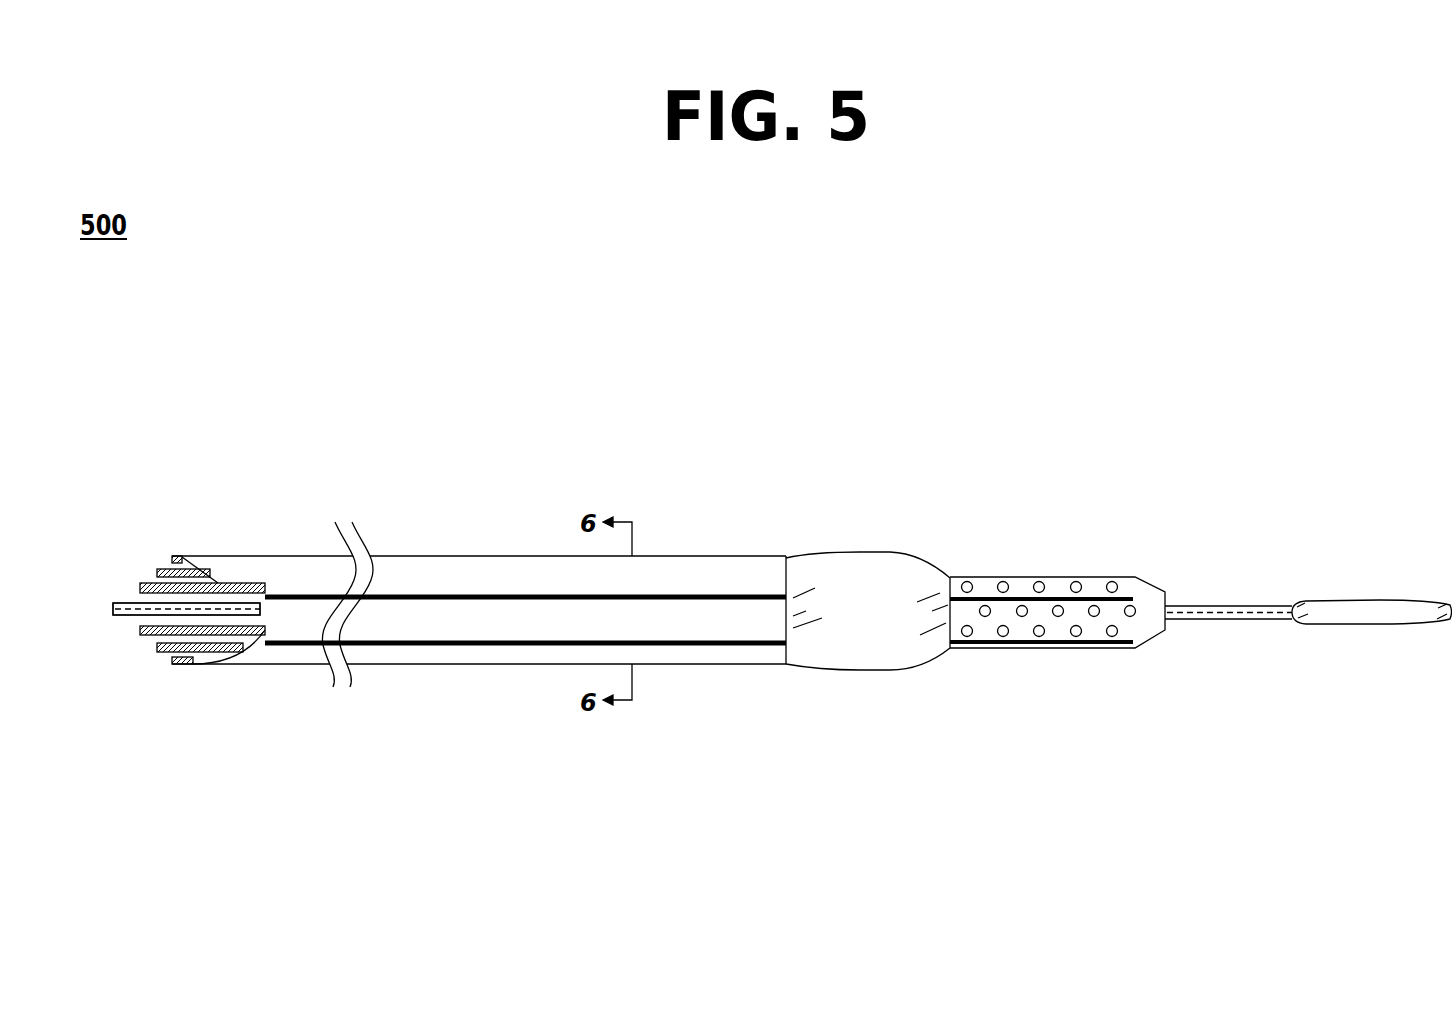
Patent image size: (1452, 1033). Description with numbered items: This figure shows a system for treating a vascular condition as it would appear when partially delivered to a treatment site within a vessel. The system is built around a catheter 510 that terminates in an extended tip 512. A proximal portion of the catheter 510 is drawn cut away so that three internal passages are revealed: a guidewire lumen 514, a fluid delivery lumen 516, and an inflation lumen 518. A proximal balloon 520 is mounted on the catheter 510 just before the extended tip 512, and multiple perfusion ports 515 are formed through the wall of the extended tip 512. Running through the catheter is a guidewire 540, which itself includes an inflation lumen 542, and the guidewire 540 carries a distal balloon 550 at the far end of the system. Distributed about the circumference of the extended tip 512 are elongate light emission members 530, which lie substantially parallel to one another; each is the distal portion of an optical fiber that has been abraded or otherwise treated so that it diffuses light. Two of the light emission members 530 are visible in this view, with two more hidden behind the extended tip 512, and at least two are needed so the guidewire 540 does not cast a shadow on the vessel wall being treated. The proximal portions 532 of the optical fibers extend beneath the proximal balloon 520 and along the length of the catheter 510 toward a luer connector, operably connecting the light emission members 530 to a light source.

The catheter 510 is at (480, 572).
The extended tip 512 is at (1172, 677).
The guidewire lumen 514 is at (254, 619).
The perfusion ports 515 is at (1113, 584).
The fluid delivery lumen 516 is at (223, 639).
The inflation lumen 518 is at (193, 657).
The proximal balloon 520 is at (858, 572).
The light emission members 530 is at (1023, 598).
The proximal portions of optical fibers 532 is at (686, 597).
The guidewire 540 is at (121, 615).
The inflation lumen 542 is at (100, 608).
The distal balloon 550 is at (1377, 605).